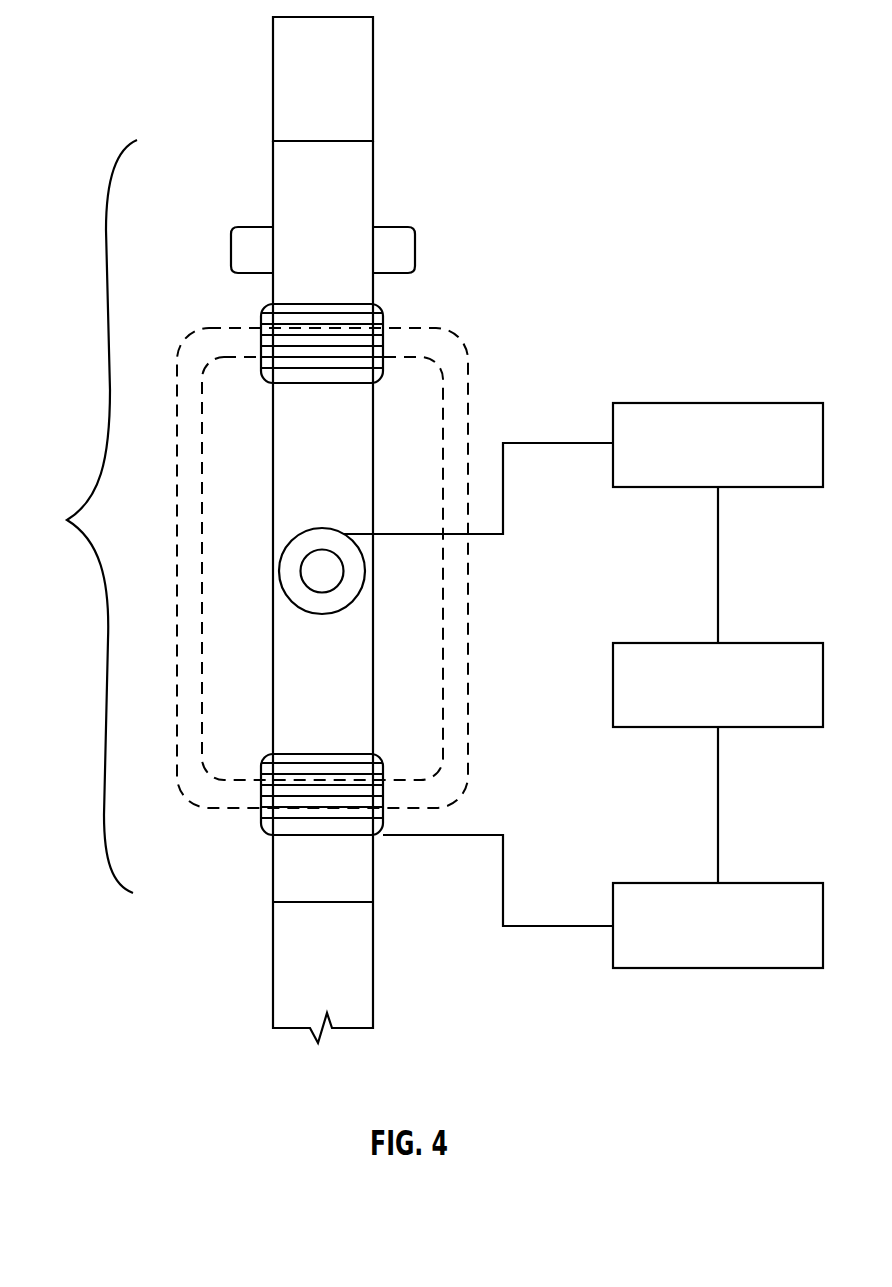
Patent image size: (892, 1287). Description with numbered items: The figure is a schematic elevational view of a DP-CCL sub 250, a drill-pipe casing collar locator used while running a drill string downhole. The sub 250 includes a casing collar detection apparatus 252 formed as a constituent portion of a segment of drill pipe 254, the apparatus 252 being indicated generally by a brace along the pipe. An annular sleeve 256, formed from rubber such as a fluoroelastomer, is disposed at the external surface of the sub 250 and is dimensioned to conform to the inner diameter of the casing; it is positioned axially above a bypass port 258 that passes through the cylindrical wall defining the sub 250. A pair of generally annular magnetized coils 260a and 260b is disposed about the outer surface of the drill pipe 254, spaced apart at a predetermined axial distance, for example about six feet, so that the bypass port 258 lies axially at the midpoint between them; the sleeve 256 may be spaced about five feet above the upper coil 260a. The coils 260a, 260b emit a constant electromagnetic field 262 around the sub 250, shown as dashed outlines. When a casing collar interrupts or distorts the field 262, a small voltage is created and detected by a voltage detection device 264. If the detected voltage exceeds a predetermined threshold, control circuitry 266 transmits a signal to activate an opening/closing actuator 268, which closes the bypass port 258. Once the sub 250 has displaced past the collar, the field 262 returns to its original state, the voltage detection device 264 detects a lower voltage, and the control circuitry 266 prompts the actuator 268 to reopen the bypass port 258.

The DP-CCL sub 250 is at (468, 68).
The casing collar detection apparatus 252 is at (79, 516).
The drill pipe 254 is at (272, 110).
The annular sleeve 256 is at (231, 255).
The bypass port 258 is at (374, 568).
The magnetized coil 260a is at (385, 347).
The magnetized coil 260b is at (385, 788).
The electromagnetic field 262 is at (192, 570).
The voltage detection device 264 is at (647, 883).
The control circuitry 266 is at (647, 643).
The opening/closing actuator 268 is at (647, 403).